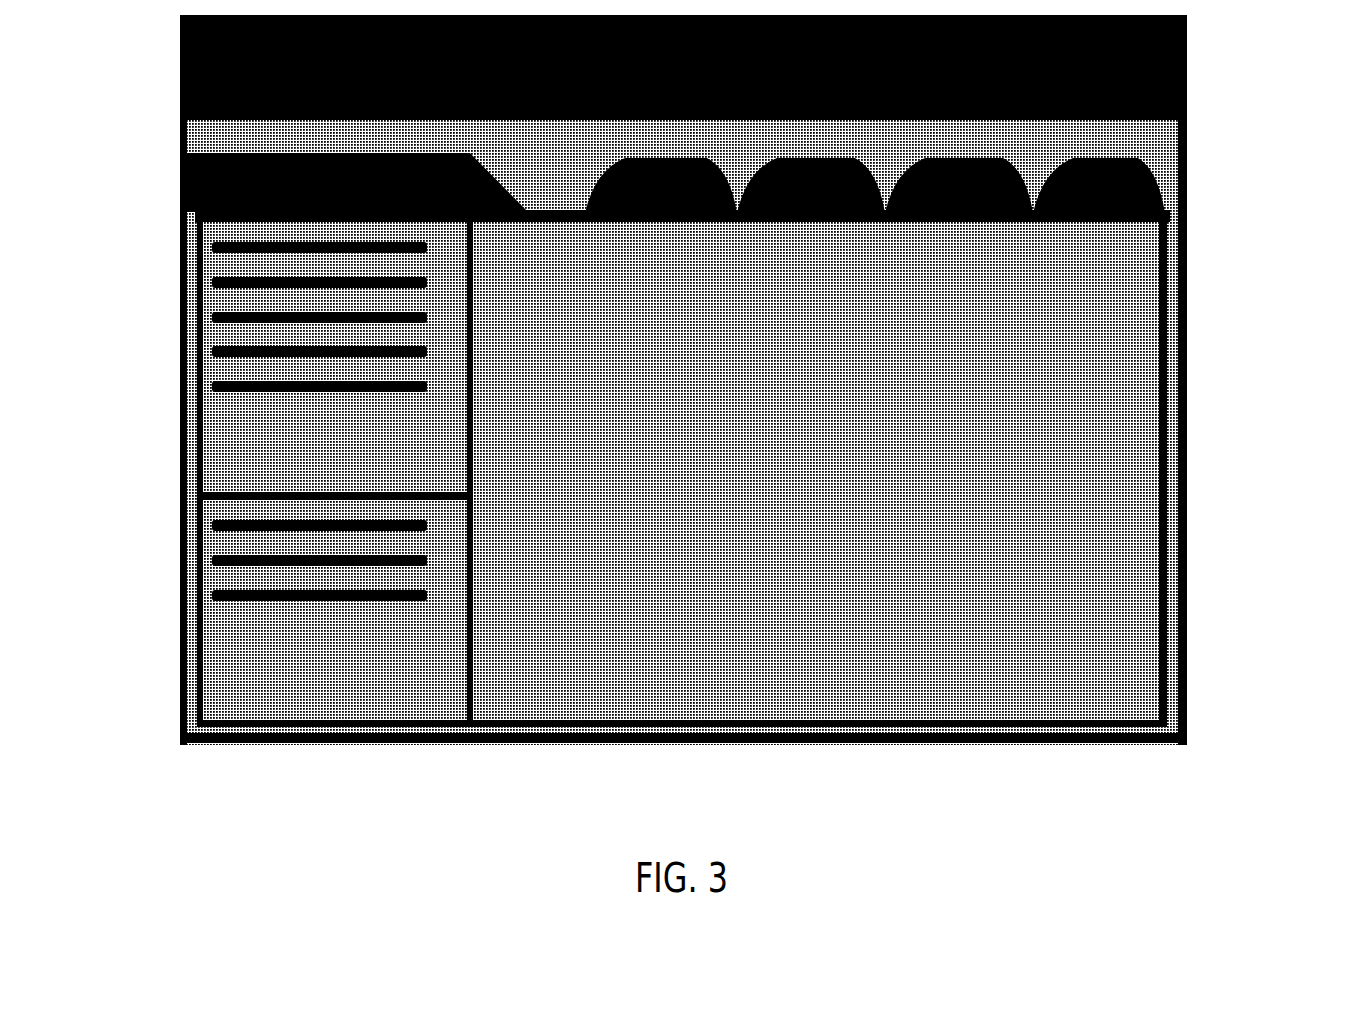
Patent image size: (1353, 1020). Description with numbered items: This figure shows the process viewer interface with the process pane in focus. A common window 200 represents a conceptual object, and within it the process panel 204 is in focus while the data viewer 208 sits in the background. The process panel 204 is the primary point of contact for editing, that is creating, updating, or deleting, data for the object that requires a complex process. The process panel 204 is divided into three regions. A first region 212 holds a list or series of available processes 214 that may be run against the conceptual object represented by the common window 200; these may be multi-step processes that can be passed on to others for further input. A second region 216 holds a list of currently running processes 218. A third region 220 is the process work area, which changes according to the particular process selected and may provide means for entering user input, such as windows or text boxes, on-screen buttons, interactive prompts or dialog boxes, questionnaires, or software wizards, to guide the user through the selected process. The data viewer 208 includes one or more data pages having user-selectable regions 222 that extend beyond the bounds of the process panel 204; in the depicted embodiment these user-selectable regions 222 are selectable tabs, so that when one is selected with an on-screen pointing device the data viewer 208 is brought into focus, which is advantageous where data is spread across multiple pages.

The common window 200 is at (177, 142).
The process panel 204 is at (1175, 343).
The data viewer 208 is at (1172, 203).
The first region 212 is at (227, 413).
The available processes 214 is at (237, 255).
The second region 216 is at (220, 655).
The currently running processes 218 is at (228, 532).
The process work area 220 is at (787, 456).
The user-selectable regions 222 is at (960, 190).